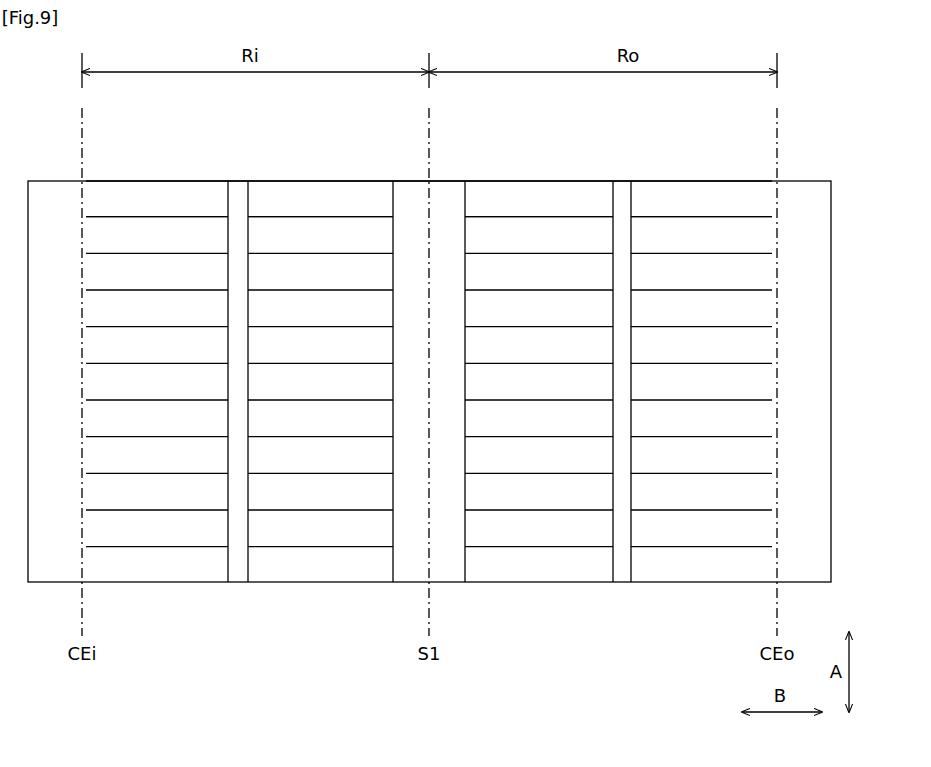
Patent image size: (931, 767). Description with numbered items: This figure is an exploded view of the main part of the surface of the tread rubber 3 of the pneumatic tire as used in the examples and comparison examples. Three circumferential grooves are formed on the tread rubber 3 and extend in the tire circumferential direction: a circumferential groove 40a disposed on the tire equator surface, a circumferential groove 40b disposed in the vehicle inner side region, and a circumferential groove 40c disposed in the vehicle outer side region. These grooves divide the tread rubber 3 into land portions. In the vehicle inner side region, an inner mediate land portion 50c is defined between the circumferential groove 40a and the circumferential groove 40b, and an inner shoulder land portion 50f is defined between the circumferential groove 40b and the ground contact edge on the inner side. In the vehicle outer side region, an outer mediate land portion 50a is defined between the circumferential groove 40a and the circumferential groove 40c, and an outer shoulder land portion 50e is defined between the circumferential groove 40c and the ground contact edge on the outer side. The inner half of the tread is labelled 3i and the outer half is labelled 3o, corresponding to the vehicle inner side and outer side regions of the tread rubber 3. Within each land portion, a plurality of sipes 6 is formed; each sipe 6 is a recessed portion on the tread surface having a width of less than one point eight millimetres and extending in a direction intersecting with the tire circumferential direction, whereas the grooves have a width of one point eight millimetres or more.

The tread rubber 3 is at (441, 170).
The inner cell region 3i is at (174, 177).
The outer cell region 3o is at (553, 177).
The sipe 6 is at (156, 216).
The circumferential groove 40a is at (391, 205).
The circumferential groove 40b is at (226, 205).
The circumferential groove 40c is at (611, 205).
The outer mediate land portion 50a is at (540, 562).
The inner mediate land portion 50c is at (320, 562).
The outer shoulder land portion 50e is at (702, 562).
The inner shoulder land portion 50f is at (157, 562).